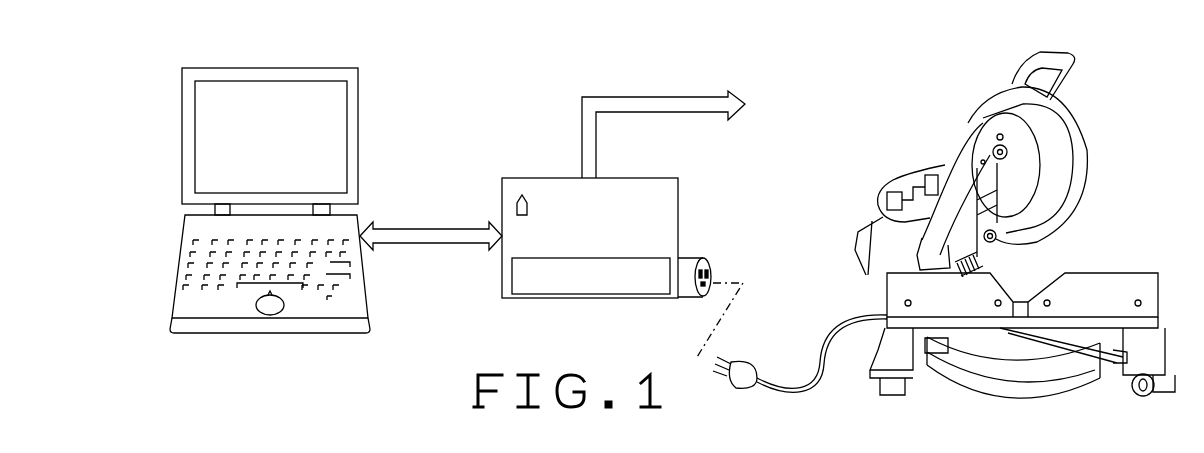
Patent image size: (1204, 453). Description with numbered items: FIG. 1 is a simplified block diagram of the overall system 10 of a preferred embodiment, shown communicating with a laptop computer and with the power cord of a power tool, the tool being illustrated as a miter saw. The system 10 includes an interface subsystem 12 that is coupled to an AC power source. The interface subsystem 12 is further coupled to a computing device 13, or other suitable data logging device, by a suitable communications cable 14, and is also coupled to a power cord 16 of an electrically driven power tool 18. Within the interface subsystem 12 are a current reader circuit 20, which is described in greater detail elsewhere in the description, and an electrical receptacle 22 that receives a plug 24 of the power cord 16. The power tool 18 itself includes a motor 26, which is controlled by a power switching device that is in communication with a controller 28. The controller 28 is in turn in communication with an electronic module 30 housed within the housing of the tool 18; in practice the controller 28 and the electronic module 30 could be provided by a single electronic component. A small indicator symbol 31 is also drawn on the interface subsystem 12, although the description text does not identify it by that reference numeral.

The system 10 is at (625, 204).
The interface subsystem 12 is at (690, 194).
The computing device 13 is at (348, 110).
The communications cable 14 is at (423, 240).
The power cord 16 is at (772, 392).
The power tool 18 is at (996, 225).
The current reader circuit 20 is at (533, 294).
The electrical receptacle 22 is at (690, 262).
The plug 24 is at (745, 372).
The motor 26 is at (884, 160).
The controller 28 is at (887, 196).
The electronic module 30 is at (937, 174).
The indicator 31 is at (515, 207).